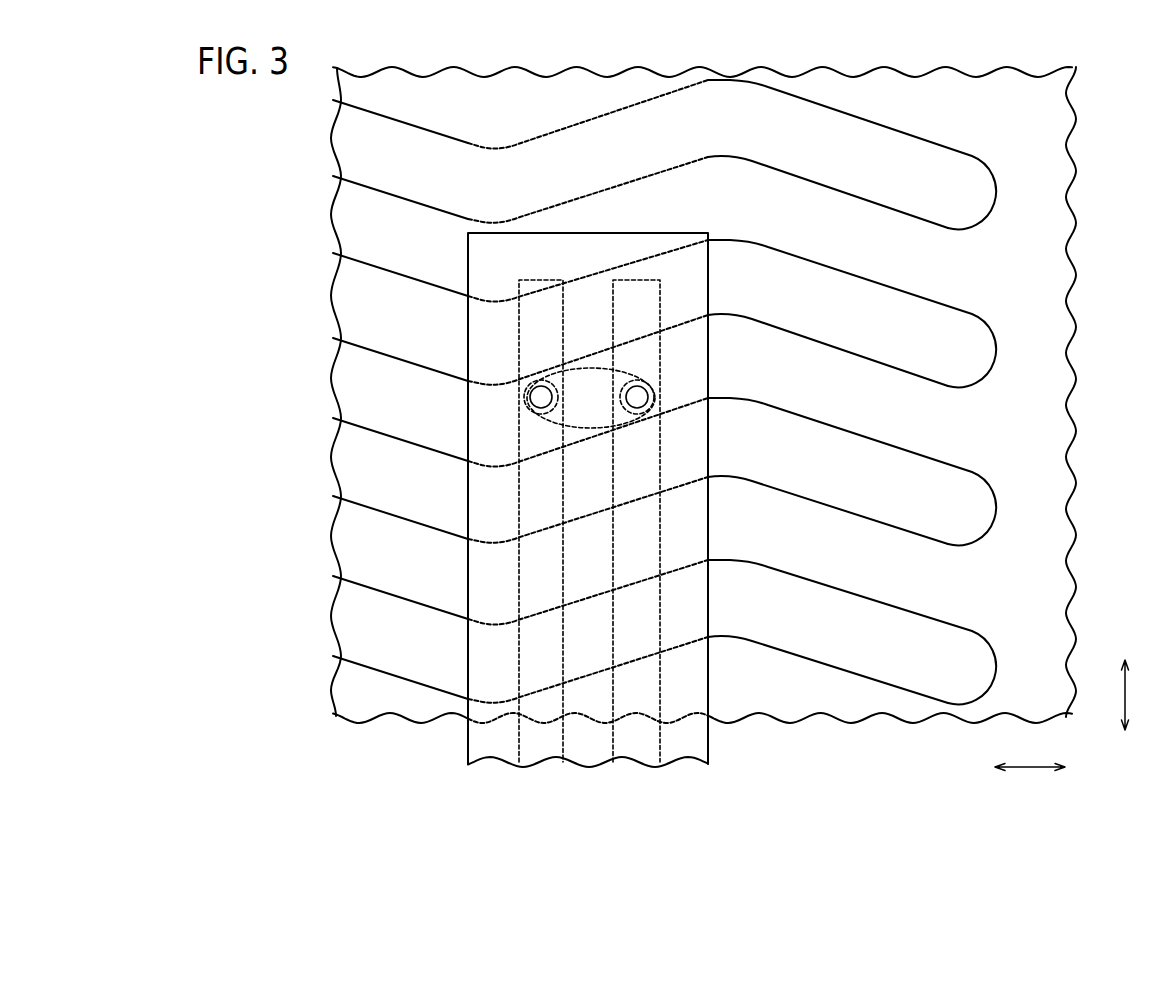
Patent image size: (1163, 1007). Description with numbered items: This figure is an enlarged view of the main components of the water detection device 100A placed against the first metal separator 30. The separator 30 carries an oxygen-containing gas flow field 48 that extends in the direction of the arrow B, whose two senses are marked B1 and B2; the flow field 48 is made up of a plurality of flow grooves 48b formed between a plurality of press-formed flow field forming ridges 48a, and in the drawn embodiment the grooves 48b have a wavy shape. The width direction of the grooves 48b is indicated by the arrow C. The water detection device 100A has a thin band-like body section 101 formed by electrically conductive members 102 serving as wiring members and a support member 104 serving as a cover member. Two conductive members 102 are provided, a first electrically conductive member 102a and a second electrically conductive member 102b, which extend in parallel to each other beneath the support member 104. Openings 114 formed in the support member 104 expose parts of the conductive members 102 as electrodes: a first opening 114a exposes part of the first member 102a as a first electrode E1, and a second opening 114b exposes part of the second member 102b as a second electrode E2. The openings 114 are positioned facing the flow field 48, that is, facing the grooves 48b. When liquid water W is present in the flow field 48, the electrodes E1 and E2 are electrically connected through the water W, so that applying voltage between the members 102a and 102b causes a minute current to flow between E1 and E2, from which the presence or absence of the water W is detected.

The first metal separator 30 is at (1037, 60).
The oxygen-containing gas flow field 48 is at (664, 363).
The flow field forming ridges 48a is at (927, 152).
The flow grooves 48b is at (878, 221).
The water detection device 100A is at (510, 500).
The body section 101 is at (454, 738).
The electrically conductive members 102 is at (587, 521).
The first electrically conductive member 102a is at (519, 572).
The second electrically conductive member 102b is at (660, 530).
The support member 104 is at (721, 599).
The openings 114 is at (594, 387).
The first opening 114a is at (528, 414).
The second opening 114b is at (652, 390).
The first electrode E1 is at (541, 397).
The second electrode E2 is at (637, 400).
The liquid water W is at (597, 368).
The arrow B is at (1030, 760).
The arrow B1 direction B1 is at (980, 768).
The arrow B2 direction B2 is at (1080, 768).
The arrow C is at (1134, 695).